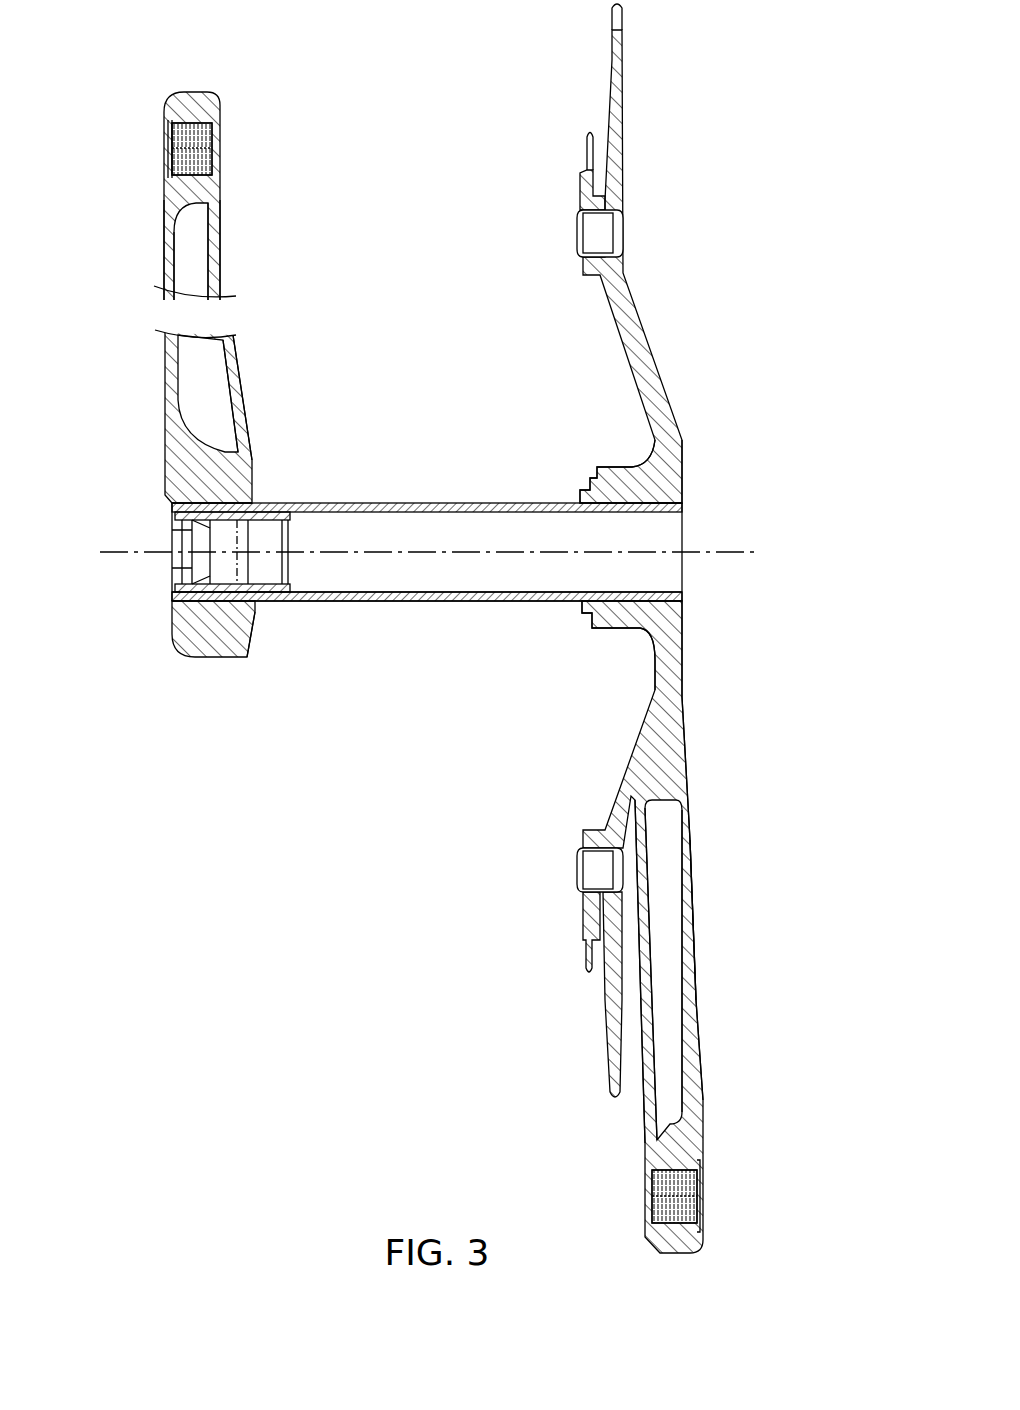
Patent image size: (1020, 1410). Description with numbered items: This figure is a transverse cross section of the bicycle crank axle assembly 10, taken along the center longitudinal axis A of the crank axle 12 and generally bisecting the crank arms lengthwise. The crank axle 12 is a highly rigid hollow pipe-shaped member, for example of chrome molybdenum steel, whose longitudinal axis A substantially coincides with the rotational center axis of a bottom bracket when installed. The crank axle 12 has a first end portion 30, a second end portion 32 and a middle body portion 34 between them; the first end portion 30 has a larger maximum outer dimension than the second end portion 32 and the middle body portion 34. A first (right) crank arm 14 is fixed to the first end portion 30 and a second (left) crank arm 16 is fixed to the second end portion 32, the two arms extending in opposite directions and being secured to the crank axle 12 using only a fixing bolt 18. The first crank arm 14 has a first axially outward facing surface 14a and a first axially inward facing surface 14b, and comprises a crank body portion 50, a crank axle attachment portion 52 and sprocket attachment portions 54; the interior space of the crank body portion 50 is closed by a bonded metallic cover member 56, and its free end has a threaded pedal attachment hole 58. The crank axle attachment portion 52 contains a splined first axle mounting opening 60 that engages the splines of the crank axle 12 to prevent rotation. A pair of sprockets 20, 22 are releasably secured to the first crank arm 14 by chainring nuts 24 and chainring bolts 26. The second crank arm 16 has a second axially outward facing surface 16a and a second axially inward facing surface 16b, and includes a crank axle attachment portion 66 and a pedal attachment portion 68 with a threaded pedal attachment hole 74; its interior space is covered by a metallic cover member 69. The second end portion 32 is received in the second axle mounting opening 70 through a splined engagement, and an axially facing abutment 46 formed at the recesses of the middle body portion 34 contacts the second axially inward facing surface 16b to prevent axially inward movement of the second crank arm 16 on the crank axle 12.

The bicycle crank axle assembly 10 is at (752, 250).
The crank axle 12 is at (493, 480).
The first crank arm 14 is at (707, 1032).
The first axially outward facing surface 14a is at (700, 993).
The first axially inward facing surface 14b is at (648, 1006).
The second crank arm 16 is at (163, 368).
The second axially outward facing surface 16a is at (165, 268).
The second axially inward facing surface 16b is at (222, 259).
The fixing bolt 18 is at (176, 568).
The sprocket 20 is at (627, 18).
The sprocket 22 is at (582, 150).
The chainring nut 24 is at (578, 235).
The chainring bolt 26 is at (624, 236).
The first end portion 30 is at (665, 607).
The second end portion 32 is at (214, 497).
The middle body portion 34 is at (365, 603).
The axially facing abutment 46 is at (258, 632).
The crank body portion 50 is at (698, 925).
The crank axle attachment portion 52 is at (668, 484).
The sprocket attachment portion 54 is at (614, 188).
The metallic cover member 56 is at (646, 1100).
The pedal attachment hole 58 is at (686, 1214).
The first axle mounting opening 60 is at (652, 515).
The crank axle attachment portion 66 is at (215, 645).
The pedal attachment portion 68 is at (165, 212).
The metallic cover member 69 is at (244, 393).
The second axle mounting opening 70 is at (235, 522).
The pedal attachment hole 74 is at (212, 135).
The longitudinal axis A is at (112, 555).